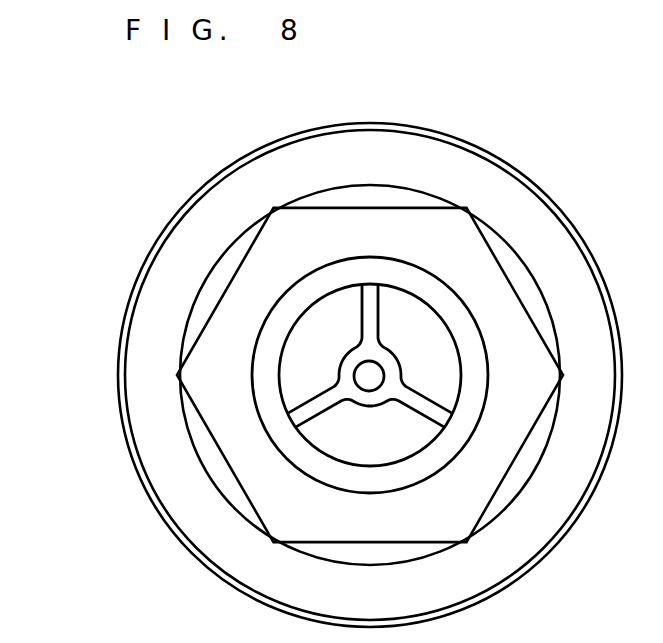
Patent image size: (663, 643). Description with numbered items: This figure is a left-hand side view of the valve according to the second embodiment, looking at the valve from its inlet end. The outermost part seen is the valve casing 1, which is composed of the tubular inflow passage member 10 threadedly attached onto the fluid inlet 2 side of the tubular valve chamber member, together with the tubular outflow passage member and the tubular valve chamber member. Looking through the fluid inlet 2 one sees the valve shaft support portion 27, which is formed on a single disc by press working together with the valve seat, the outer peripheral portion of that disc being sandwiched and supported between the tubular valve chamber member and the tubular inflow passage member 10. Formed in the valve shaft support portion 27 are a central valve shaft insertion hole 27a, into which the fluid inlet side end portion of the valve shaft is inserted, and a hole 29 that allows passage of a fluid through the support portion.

The valve casing 1 is at (485, 141).
The tubular inflow passage member 10 is at (217, 203).
The fluid inlet 2 is at (322, 335).
The valve shaft support portion 27 is at (368, 308).
The valve shaft insertion hole 27a is at (366, 383).
The hole 29 is at (313, 368).